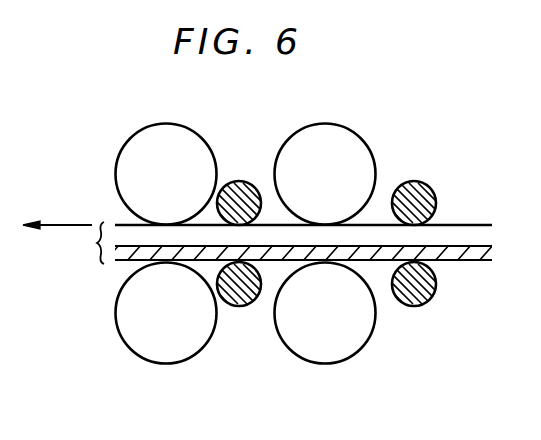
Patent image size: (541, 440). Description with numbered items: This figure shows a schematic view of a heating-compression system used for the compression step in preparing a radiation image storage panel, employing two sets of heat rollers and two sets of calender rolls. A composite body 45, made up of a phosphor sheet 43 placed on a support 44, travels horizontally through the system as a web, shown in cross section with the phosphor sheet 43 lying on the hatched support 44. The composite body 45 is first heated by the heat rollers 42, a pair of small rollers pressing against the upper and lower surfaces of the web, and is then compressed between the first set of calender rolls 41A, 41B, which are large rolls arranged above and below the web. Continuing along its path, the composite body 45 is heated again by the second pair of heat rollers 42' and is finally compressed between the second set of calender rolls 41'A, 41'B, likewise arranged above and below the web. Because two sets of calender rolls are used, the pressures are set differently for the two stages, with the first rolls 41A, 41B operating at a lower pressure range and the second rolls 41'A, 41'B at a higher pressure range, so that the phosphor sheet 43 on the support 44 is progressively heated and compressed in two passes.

The calender roll 41'A is at (166, 151).
The calender roll 41A is at (328, 135).
The calender roll 41'B is at (161, 332).
The calender roll 41B is at (347, 349).
The heat roller 42' is at (240, 243).
The heat roller 42 is at (415, 237).
The phosphor sheet 43 is at (478, 230).
The support 44 is at (486, 254).
The composite body 45 is at (93, 242).